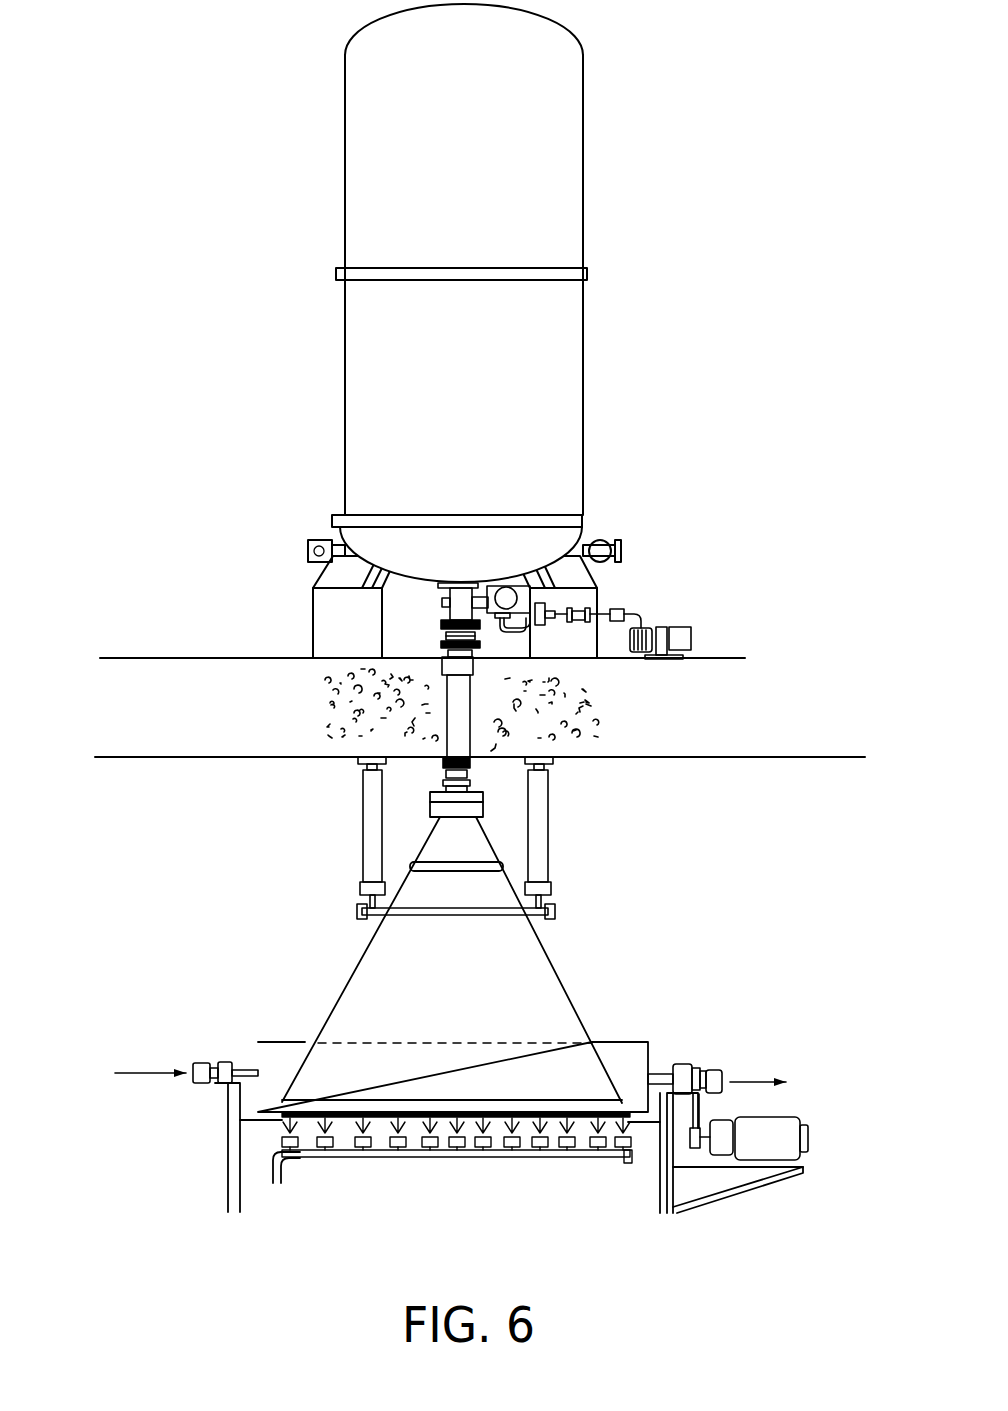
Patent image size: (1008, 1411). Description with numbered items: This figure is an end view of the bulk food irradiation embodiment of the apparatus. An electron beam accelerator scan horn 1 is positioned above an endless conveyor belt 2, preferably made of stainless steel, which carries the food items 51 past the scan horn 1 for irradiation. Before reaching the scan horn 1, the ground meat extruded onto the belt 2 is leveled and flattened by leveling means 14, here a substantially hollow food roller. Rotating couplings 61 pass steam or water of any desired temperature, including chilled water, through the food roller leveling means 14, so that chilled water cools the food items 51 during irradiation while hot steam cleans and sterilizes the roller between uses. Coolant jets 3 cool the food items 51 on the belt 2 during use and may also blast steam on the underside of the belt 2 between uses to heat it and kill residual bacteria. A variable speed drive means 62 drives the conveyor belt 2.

The electron beam accelerator scan horn 1 is at (452, 992).
The leveling means 14 is at (303, 1040).
The conveyor belt 2 is at (258, 1140).
The coolant jets 3 is at (403, 1133).
The food items 51 is at (585, 1112).
The rotating couplings 61 is at (200, 1060).
The variable speed drive means 62 is at (787, 1115).